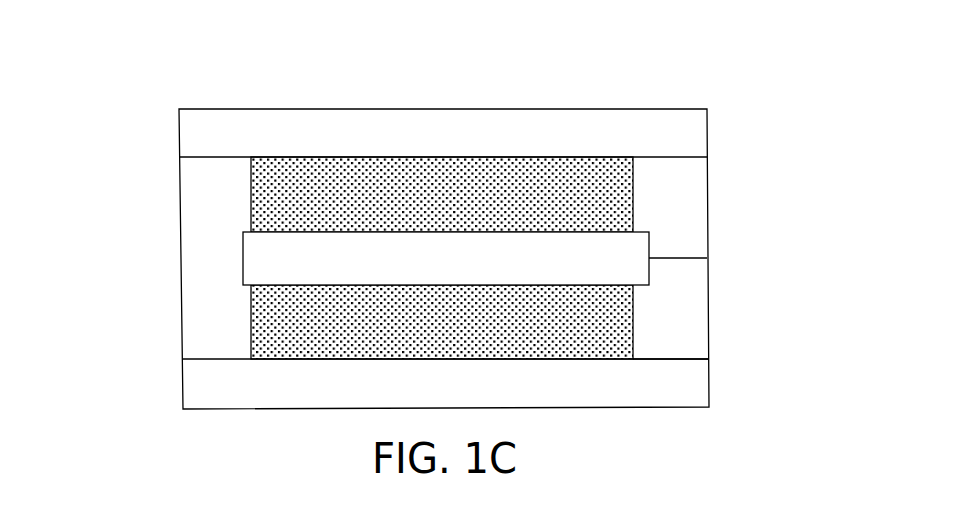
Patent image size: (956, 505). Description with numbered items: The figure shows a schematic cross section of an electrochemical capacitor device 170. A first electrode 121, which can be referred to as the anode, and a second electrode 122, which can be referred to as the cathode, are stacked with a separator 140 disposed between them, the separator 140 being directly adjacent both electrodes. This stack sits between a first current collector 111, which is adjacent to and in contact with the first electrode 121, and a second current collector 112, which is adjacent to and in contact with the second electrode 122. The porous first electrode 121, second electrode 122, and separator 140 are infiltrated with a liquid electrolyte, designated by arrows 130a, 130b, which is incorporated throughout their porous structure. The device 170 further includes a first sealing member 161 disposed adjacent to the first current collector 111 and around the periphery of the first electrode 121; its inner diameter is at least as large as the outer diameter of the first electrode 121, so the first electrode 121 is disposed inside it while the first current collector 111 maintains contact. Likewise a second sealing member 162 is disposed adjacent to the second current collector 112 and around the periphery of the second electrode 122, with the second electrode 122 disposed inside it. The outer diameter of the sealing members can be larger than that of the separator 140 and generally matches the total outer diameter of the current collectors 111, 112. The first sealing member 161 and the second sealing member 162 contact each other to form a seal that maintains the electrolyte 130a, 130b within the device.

The device 170 is at (250, 62).
The second current collector 112 is at (179, 127).
The first current collector 111 is at (218, 388).
The second electrode 122 is at (317, 197).
The first electrode 121 is at (367, 317).
The separator 140 is at (343, 268).
The second sealing member 162 is at (680, 183).
The first sealing member 161 is at (680, 295).
The electrolyte 130b is at (592, 250).
The electrolyte 130a is at (572, 341).